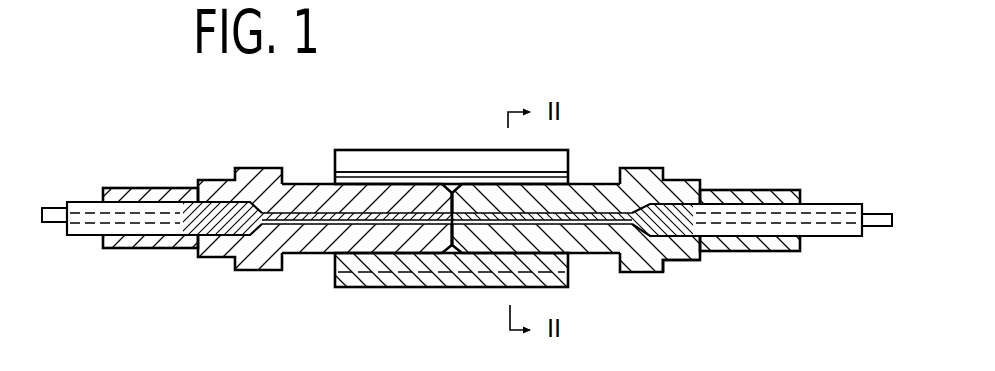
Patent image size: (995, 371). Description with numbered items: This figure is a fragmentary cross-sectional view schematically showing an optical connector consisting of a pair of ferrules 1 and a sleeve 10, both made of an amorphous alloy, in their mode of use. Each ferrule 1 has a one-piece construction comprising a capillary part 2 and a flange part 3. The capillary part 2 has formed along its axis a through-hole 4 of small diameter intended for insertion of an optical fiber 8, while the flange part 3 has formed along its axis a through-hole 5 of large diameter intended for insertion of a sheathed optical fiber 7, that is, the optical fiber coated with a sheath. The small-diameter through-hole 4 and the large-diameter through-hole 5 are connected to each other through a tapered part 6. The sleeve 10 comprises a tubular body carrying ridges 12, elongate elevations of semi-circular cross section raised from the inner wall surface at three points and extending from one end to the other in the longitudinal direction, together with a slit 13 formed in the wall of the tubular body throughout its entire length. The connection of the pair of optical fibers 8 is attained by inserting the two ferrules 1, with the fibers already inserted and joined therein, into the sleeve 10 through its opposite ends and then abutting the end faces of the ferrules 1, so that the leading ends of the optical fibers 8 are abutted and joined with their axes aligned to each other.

The ferrule 1 is at (464, 207).
The capillary part 2 is at (306, 182).
The flange part 3 is at (122, 188).
The through-hole of a small diameter 4 is at (497, 224).
The through-hole of a large diameter 5 is at (752, 238).
The tapered part 6 is at (660, 262).
The sheathed optical fiber 7 is at (90, 236).
The optical fiber 8 is at (306, 224).
The sleeve 10 is at (451, 118).
The ridges 12 is at (570, 258).
The slit 13 is at (353, 158).